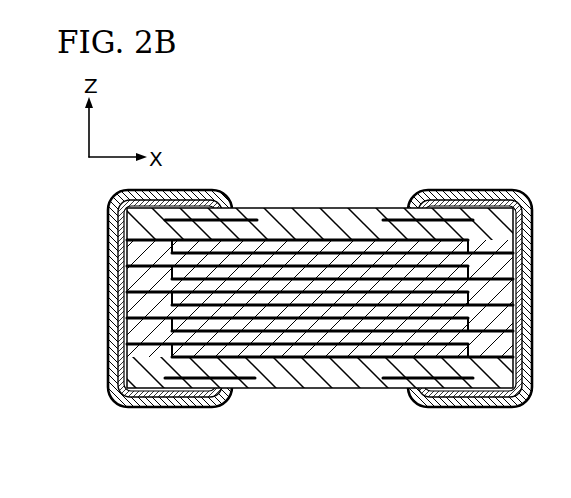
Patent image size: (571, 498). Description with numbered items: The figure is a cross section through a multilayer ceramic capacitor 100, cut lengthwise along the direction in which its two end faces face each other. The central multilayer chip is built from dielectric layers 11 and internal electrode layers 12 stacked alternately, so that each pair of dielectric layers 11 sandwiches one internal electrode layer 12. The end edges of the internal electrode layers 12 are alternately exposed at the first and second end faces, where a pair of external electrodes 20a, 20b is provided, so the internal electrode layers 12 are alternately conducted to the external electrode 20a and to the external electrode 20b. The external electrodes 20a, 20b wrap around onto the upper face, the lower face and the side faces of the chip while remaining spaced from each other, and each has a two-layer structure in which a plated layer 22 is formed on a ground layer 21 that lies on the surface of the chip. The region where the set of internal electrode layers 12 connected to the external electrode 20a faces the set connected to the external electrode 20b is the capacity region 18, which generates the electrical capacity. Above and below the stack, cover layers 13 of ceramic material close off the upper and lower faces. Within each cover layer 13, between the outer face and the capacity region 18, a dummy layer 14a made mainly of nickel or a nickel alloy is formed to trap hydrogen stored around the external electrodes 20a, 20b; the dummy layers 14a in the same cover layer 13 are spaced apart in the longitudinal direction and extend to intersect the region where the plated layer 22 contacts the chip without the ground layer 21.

The multilayer ceramic capacitor 100 is at (380, 104).
The cover layer 13 is at (320, 208).
The dielectric layer 11 is at (330, 322).
The internal electrode layer 12 is at (386, 307).
The dummy layer 14a is at (253, 216).
The capacity region 18 is at (270, 372).
The external electrode 20a is at (257, 136).
The external electrode 20b is at (558, 136).
The ground layer 21 is at (215, 193).
The plated layer 22 is at (168, 191).